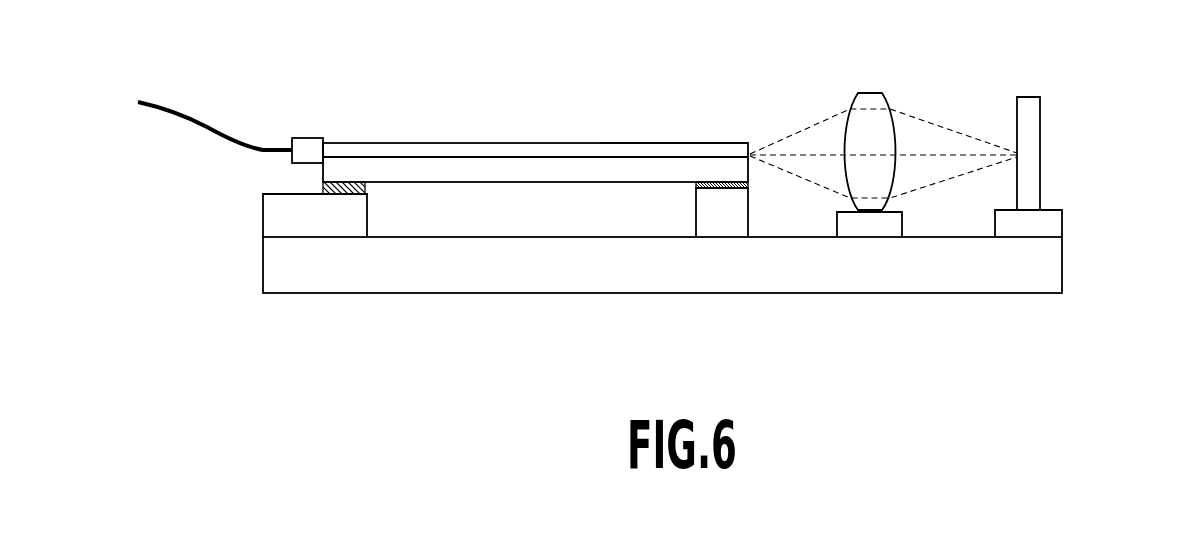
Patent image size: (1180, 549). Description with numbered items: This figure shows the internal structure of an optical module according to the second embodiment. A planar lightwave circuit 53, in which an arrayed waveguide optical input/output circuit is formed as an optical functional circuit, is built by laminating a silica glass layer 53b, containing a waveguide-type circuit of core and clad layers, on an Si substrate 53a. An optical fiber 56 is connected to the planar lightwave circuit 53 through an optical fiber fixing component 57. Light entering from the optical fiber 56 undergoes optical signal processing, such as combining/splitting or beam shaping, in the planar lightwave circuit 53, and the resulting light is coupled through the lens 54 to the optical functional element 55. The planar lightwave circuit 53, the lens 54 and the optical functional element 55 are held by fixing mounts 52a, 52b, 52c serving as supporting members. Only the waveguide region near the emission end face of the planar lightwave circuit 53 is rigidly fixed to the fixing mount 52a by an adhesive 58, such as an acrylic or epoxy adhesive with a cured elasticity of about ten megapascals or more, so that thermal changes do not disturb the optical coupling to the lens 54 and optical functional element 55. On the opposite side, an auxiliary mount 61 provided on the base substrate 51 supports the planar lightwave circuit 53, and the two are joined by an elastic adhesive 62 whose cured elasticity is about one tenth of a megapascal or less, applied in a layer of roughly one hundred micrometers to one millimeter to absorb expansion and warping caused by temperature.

The base substrate 51 is at (1048, 258).
The fixing mount 52a is at (723, 214).
The fixing mount 52b is at (872, 223).
The fixing mount 52c is at (1053, 228).
The planar lightwave circuit 53 is at (558, 191).
The Si substrate 53a is at (446, 172).
The silica glass layer 53b is at (682, 141).
The lens 54 is at (870, 93).
The optical functional element 55 is at (1033, 96).
The optical fiber 56 is at (208, 127).
The optical fiber fixing component 57 is at (312, 137).
The adhesive 58 is at (750, 183).
The auxiliary mount 61 is at (270, 220).
The elastic adhesive 62 is at (326, 188).